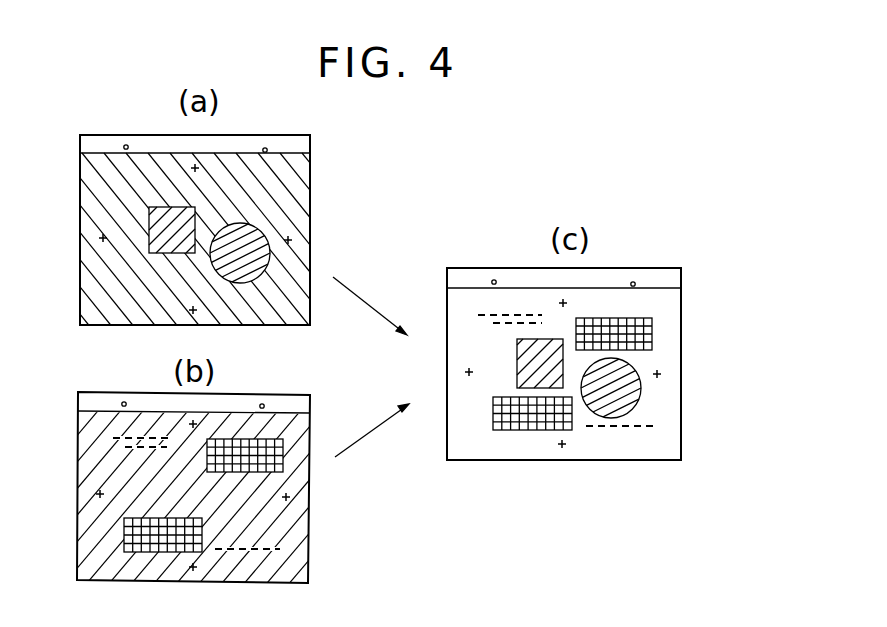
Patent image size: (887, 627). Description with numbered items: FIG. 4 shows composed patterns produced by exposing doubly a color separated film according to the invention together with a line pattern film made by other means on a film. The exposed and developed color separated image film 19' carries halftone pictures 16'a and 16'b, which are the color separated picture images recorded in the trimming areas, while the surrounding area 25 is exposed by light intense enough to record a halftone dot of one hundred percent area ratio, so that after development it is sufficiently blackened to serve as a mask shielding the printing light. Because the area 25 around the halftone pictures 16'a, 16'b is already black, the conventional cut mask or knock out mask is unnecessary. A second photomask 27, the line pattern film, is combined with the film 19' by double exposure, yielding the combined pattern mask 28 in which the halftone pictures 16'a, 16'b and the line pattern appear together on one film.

The exposed and developed color separated image film 19' is at (198, 230).
The halftone picture 16'a is at (109, 230).
The halftone picture 16'b is at (291, 253).
The area 25 is at (88, 297).
The second photomask 27 is at (75, 462).
The combined pattern mask 28 is at (730, 408).